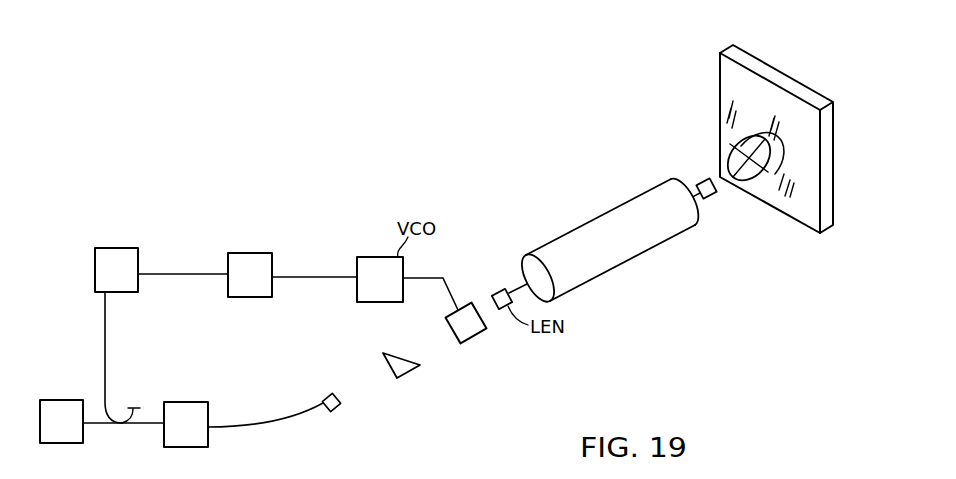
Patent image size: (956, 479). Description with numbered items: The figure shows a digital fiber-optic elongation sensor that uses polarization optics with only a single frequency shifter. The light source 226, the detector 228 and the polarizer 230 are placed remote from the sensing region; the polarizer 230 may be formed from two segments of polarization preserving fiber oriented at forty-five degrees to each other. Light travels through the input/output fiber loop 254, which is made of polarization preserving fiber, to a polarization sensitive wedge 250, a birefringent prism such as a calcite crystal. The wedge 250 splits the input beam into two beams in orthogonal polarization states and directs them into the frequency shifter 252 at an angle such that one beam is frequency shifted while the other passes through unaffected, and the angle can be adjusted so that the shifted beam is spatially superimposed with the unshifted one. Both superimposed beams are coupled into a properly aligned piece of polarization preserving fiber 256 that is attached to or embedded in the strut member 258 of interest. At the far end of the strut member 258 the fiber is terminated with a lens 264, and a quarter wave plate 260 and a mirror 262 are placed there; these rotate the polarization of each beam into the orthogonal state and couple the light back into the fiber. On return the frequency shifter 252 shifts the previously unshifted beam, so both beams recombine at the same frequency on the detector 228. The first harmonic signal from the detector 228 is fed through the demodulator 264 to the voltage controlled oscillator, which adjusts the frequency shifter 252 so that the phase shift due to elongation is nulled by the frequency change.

The light source 226 is at (62, 400).
The detector 228 is at (121, 248).
The polarizer 230 is at (185, 402).
The polarization sensitive wedge 250 is at (413, 374).
The frequency shifter 252 is at (473, 338).
The input/output fiber loop 254 is at (282, 419).
The polarization preserving fiber 256 is at (609, 239).
The strut member 258 is at (638, 252).
The quarter wave plate 260 is at (735, 157).
The mirror 262 is at (785, 83).
The lens 264 is at (256, 253).